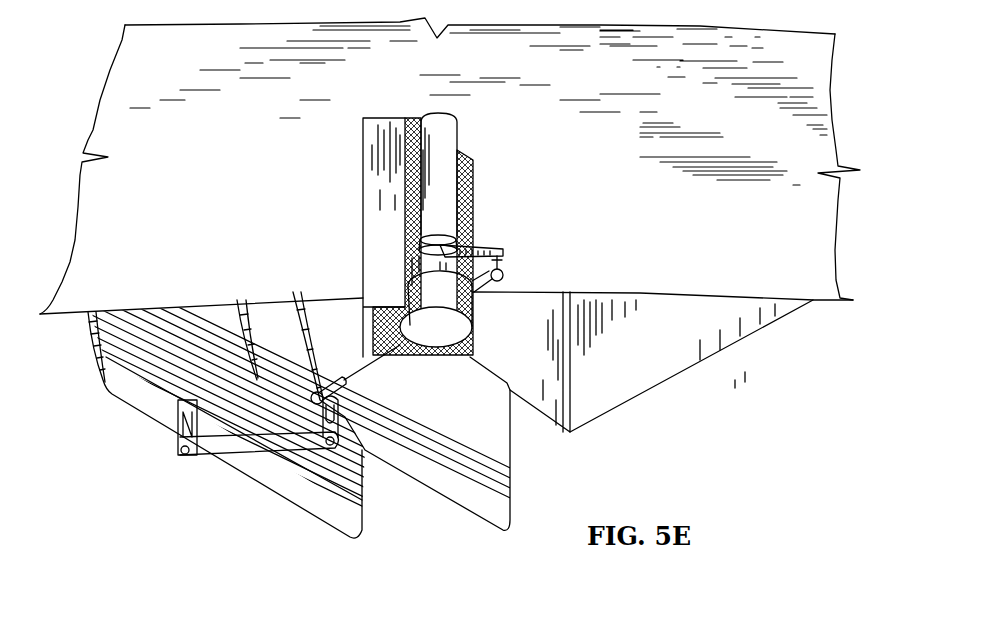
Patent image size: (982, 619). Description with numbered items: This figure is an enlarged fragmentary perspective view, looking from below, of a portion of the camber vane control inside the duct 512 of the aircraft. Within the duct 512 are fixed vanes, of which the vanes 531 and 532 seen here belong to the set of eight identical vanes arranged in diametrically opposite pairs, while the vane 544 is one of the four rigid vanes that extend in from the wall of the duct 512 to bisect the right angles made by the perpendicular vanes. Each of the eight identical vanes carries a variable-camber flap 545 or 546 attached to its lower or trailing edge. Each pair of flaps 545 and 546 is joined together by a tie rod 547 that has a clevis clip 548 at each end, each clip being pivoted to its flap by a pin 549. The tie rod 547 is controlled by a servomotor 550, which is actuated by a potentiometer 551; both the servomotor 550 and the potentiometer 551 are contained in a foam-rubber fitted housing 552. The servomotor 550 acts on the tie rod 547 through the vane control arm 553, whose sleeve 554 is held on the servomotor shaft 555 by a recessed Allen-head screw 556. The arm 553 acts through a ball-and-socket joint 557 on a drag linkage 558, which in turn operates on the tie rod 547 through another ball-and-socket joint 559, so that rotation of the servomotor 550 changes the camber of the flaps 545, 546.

The duct 512 is at (243, 226).
The fixed vane 531 is at (538, 344).
The fixed vane 532 is at (226, 307).
The rigid vane 544 is at (705, 342).
The variable-camber flap 545 is at (293, 493).
The variable-camber flap 546 is at (505, 525).
The tie rod 547 is at (215, 465).
The clevis clip 548 is at (178, 443).
The pin 549 is at (183, 456).
The servomotor 550 is at (455, 135).
The potentiometer 551 is at (459, 339).
The foam-rubber fitted housing 552 is at (380, 192).
The vane control arm 553 is at (503, 250).
The sleeve 554 is at (412, 262).
The servomotor shaft 555 is at (452, 238).
The recessed Allen-head screw 556 is at (440, 294).
The ball-and-socket joint 557 is at (503, 262).
The drag linkage 558 is at (345, 376).
The ball-and-socket joint 559 is at (316, 392).